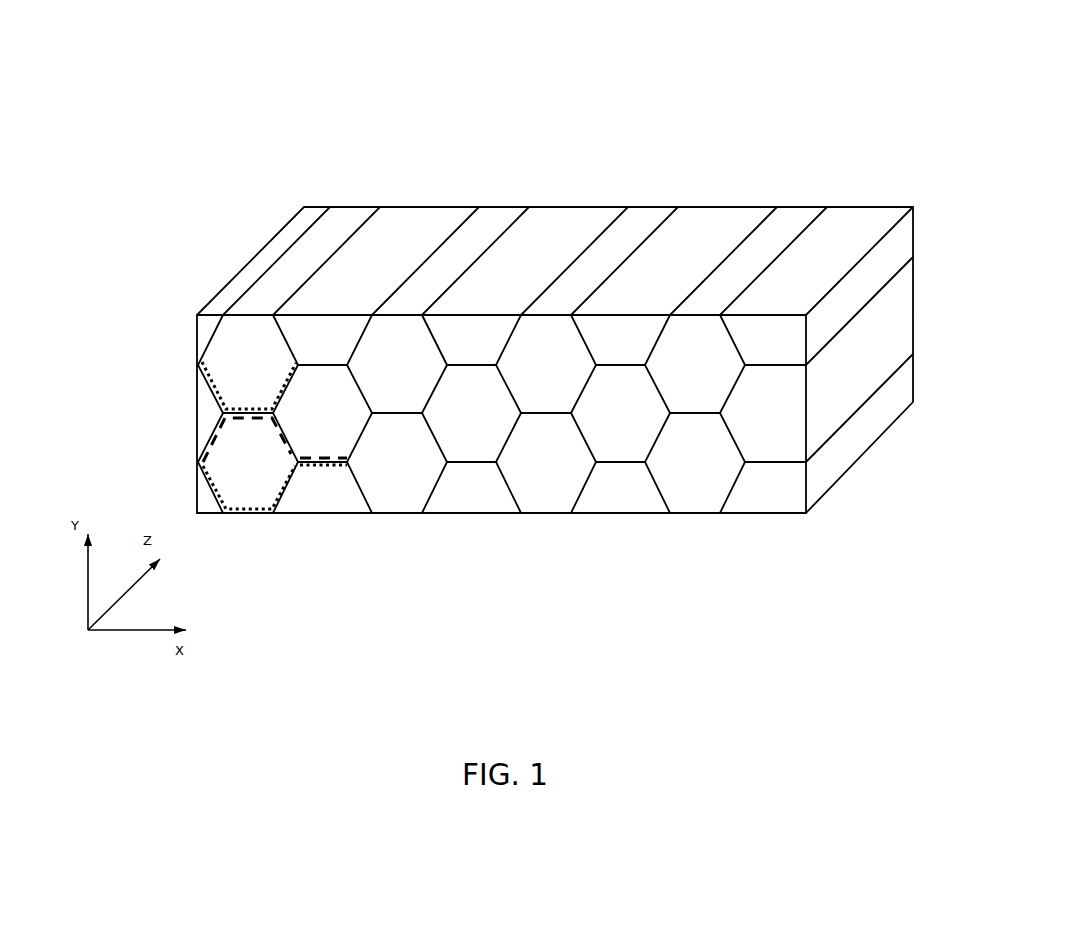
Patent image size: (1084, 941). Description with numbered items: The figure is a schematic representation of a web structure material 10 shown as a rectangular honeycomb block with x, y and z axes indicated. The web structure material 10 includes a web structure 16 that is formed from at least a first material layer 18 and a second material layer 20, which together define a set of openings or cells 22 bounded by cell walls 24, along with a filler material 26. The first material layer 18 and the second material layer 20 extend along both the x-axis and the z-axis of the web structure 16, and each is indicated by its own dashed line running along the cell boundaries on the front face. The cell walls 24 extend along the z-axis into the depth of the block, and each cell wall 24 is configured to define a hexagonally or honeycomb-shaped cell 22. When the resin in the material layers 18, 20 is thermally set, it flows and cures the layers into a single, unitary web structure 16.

The web structure material 10 is at (632, 170).
The web structure 16 is at (190, 352).
The first material layer 18 is at (255, 513).
The second material layer 20 is at (213, 443).
The cell 22 is at (432, 325).
The cell wall 24 is at (210, 423).
The filler material 26 is at (392, 485).